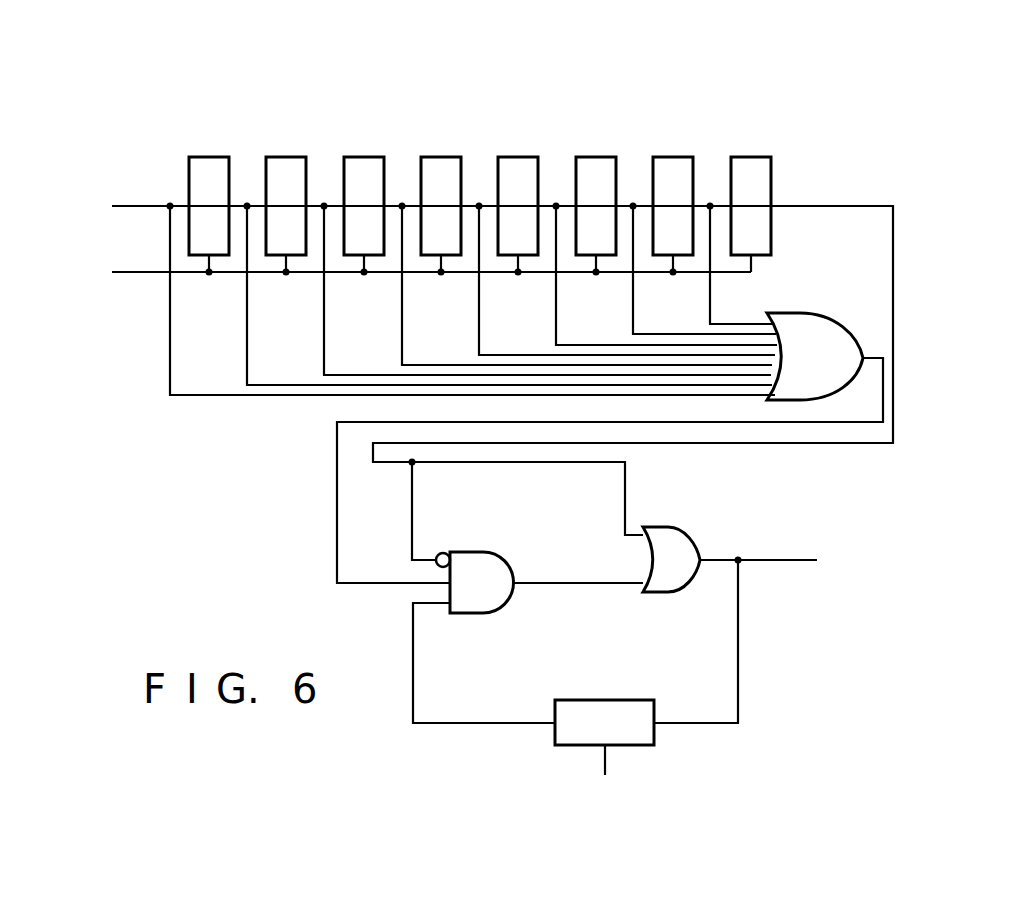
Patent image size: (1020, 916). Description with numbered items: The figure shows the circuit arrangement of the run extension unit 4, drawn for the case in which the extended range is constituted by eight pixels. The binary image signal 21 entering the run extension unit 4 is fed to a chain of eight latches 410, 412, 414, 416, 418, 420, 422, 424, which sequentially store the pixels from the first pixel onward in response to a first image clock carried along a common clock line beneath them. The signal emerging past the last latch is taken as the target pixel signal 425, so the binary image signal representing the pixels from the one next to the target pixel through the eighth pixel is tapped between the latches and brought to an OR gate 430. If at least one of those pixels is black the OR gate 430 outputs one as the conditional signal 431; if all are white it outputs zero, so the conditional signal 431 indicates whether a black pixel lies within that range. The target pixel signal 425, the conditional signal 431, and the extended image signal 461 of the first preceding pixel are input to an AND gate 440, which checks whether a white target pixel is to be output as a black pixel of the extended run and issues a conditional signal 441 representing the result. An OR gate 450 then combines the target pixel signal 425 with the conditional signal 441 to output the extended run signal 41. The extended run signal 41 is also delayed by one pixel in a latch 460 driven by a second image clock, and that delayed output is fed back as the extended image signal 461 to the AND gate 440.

The run extension unit 4 is at (824, 64).
The binary image signal 21 is at (141, 200).
The latch 410 is at (209, 157).
The latch 412 is at (286, 157).
The latch 414 is at (364, 157).
The latch 416 is at (441, 157).
The latch 418 is at (518, 157).
The latch 420 is at (596, 157).
The latch 422 is at (673, 157).
The latch 424 is at (751, 157).
The target pixel signal 425 is at (823, 204).
The OR gate 430 is at (808, 313).
The conditional signal 431 is at (337, 492).
The AND gate 440 is at (484, 552).
The conditional signal 441 is at (565, 583).
The OR gate 450 is at (687, 592).
The extended run signal 41 is at (762, 558).
The latch 460 is at (657, 704).
The extended image signal of the first preceding pixel 461 is at (508, 723).